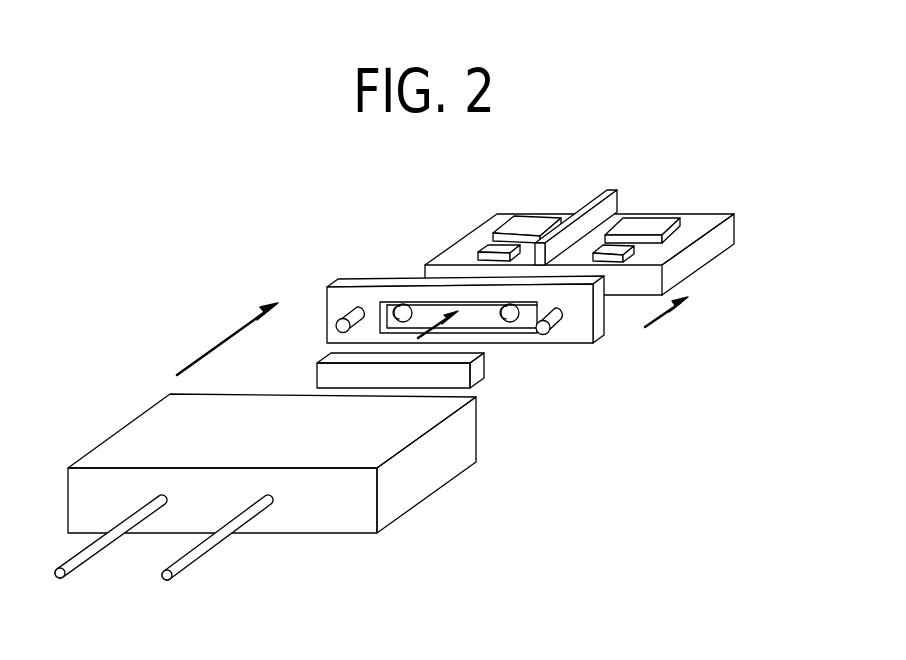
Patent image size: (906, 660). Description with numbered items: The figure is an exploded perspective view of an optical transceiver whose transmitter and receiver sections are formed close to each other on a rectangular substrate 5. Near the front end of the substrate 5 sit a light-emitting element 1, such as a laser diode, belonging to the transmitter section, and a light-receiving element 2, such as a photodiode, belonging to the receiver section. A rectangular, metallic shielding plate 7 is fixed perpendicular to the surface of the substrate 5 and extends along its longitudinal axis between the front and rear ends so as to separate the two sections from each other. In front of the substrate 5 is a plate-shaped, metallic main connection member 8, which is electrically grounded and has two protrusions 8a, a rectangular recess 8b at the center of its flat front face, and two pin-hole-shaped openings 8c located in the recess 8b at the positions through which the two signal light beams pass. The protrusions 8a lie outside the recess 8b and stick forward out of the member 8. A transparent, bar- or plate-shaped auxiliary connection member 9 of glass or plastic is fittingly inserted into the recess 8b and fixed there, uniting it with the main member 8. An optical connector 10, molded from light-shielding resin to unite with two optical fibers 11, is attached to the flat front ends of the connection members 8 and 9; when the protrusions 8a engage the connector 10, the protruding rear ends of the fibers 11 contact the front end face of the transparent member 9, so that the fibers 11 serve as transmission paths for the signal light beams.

The light-emitting element 1 is at (480, 248).
The light-receiving element 2 is at (638, 247).
The substrate 5 is at (700, 212).
The shielding plate 7 is at (588, 203).
The main connection member 8 is at (335, 279).
The protrusions 8a is at (557, 322).
The recess 8b is at (488, 320).
The pin-hole-shaped openings 8c is at (402, 304).
The auxiliary connection member 9 is at (482, 377).
The optical connector 10 is at (135, 437).
The optical fibers 11 is at (203, 547).